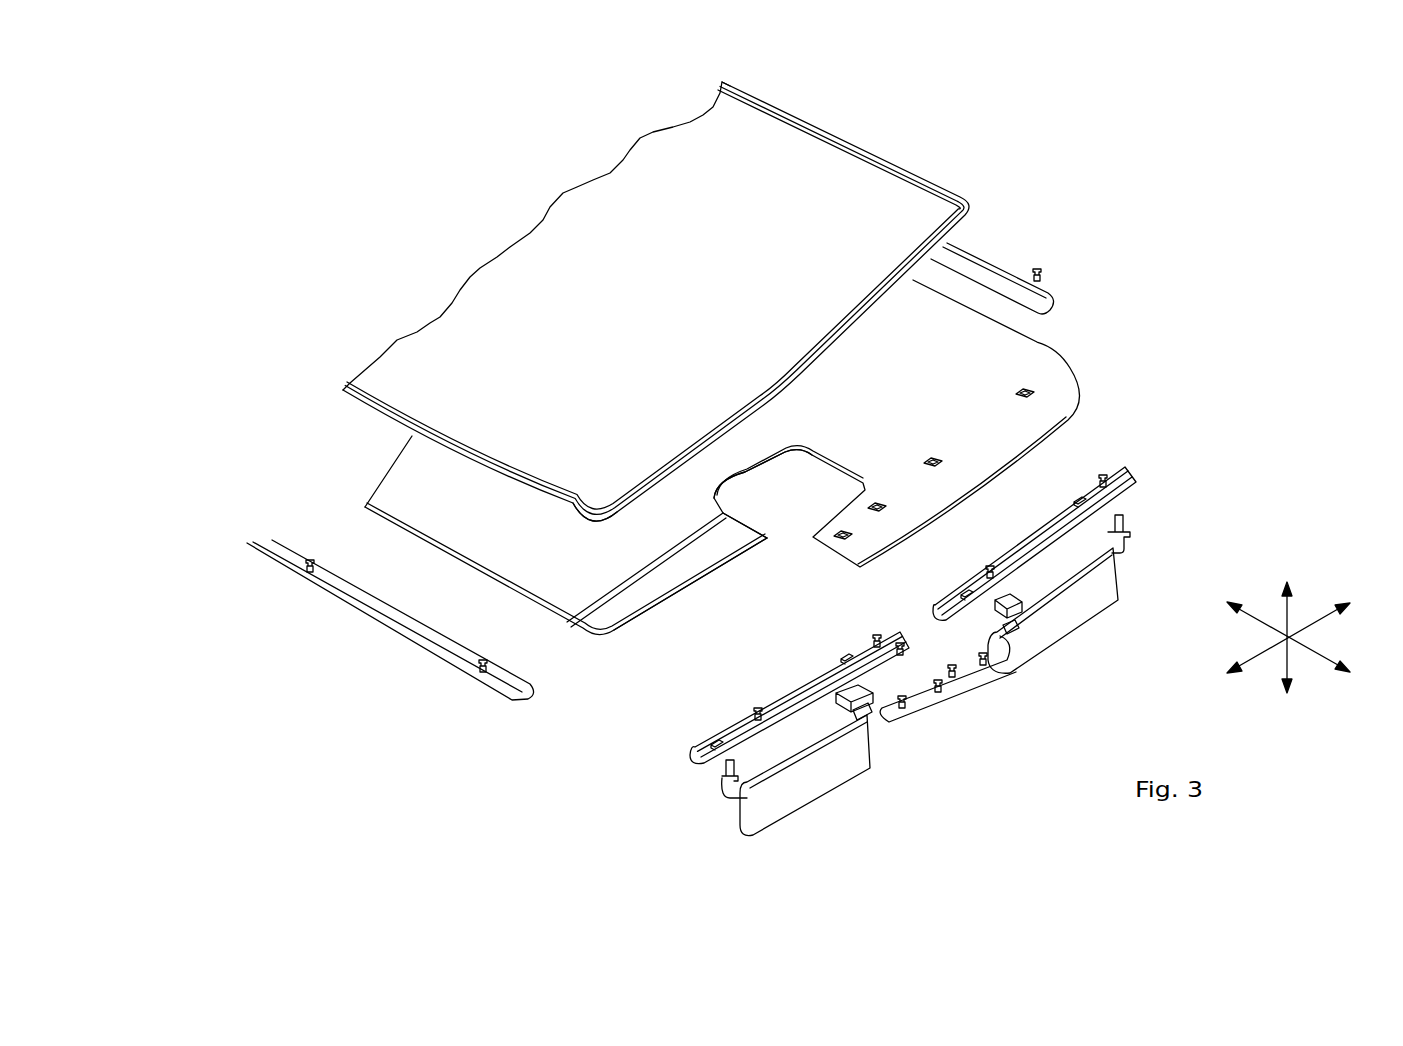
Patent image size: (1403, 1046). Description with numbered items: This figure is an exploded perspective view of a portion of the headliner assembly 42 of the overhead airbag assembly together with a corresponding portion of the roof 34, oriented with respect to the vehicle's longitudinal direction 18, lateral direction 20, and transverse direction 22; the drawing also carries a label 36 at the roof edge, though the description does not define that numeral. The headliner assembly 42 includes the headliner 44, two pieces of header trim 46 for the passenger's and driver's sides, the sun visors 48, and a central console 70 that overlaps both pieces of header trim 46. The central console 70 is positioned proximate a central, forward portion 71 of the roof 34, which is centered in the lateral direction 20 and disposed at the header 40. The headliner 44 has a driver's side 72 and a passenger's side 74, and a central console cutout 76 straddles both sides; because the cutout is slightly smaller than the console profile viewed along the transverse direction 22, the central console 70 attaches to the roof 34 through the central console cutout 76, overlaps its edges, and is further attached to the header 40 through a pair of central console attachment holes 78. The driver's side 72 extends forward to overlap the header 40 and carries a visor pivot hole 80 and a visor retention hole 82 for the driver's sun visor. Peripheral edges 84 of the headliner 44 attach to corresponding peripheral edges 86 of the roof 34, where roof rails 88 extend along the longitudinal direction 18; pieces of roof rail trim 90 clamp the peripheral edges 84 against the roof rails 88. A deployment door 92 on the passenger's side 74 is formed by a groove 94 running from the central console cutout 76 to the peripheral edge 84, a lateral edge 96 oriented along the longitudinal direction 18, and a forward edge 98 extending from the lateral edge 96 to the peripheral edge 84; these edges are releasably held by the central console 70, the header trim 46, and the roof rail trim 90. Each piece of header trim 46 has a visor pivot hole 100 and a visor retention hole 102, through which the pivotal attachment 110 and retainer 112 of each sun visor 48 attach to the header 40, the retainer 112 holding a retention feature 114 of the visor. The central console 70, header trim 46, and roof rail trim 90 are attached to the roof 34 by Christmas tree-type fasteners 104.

The longitudinal direction 18 is at (1318, 650).
The lateral direction 20 is at (1325, 612).
The transverse direction 22 is at (1281, 612).
The roof 34 is at (769, 92).
The panel edge 36 is at (816, 138).
The header 40 is at (637, 494).
The headliner assembly 42 is at (1120, 251).
The headliner 44 is at (1110, 382).
The header trim 46 is at (690, 770).
The sun visors 48 is at (822, 812).
The central console 70 is at (951, 731).
The central, forward portion 71 is at (726, 354).
The driver's side 72 is at (891, 392).
The passenger's side 74 is at (561, 540).
The central console cutout 76 is at (805, 450).
The central console attachment holes 78 is at (850, 536).
The visor pivot hole 80 is at (1020, 388).
The visor retention hole 82 is at (930, 458).
The peripheral edges 84 is at (1035, 340).
The peripheral edges 86 is at (882, 160).
The roof rails 88 is at (953, 192).
The roof rail trim 90 is at (1004, 269).
The deployment door 92 is at (697, 620).
The groove 94 is at (657, 557).
The lateral edge 96 is at (747, 522).
The forward edge 98 is at (727, 578).
The visor pivot hole 100 is at (716, 740).
The visor retention hole 102 is at (843, 654).
The fasteners 104 is at (1044, 279).
The pivotal attachment 110 is at (724, 778).
The retainer 112 is at (862, 708).
The retention feature 114 is at (872, 725).